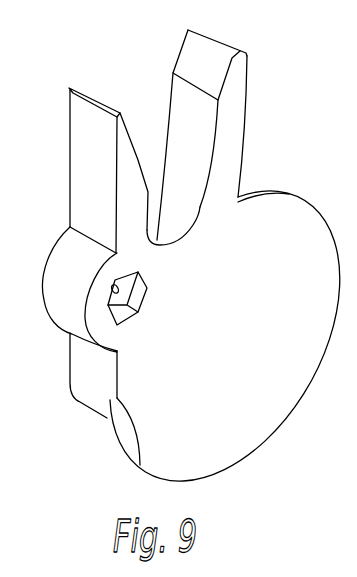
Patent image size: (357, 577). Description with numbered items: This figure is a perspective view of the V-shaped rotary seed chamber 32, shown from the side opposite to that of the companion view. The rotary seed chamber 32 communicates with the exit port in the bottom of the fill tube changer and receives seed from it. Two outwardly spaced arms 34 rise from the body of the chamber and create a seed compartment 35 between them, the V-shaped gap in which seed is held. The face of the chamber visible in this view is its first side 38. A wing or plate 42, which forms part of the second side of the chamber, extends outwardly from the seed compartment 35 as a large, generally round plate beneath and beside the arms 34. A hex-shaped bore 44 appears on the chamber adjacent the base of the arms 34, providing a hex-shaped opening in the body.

The rotary seed chamber 32 is at (272, 96).
The arms 34 is at (76, 88).
The seed compartment 35 is at (131, 58).
The first side 38 is at (228, 163).
The wing or plate 42 is at (273, 407).
The hex-shaped bore 44 is at (113, 321).